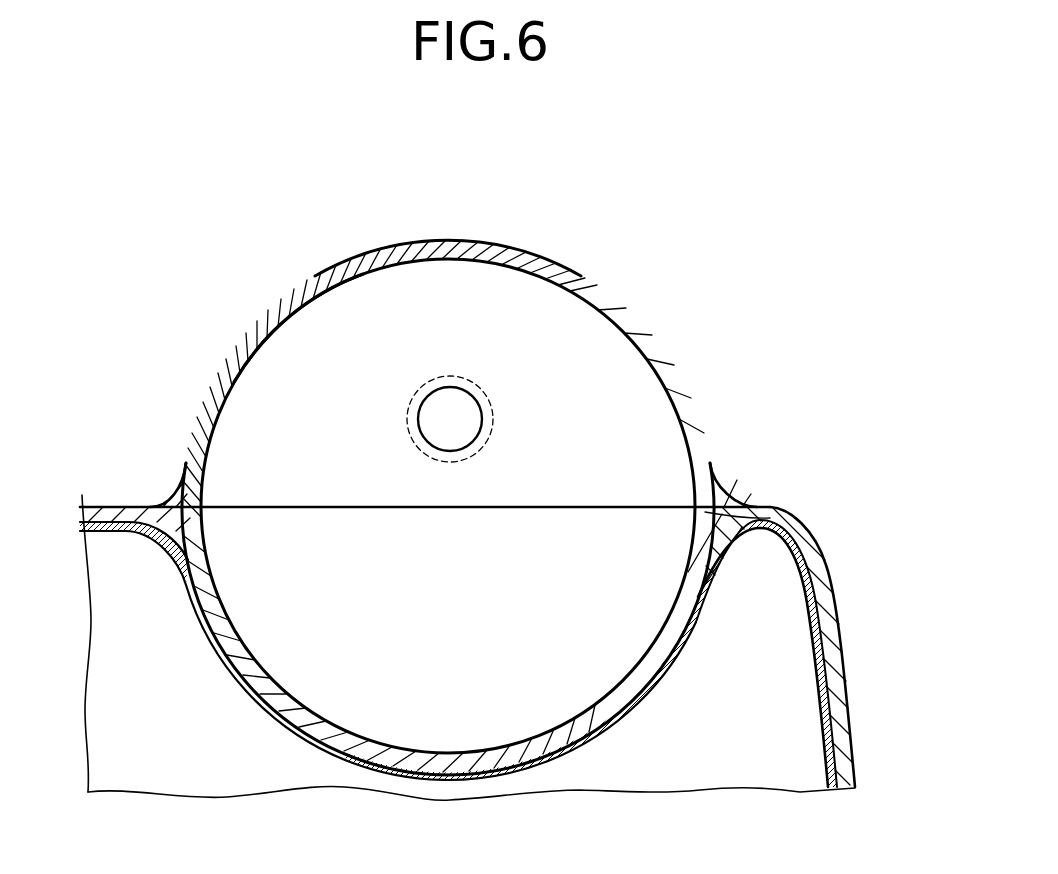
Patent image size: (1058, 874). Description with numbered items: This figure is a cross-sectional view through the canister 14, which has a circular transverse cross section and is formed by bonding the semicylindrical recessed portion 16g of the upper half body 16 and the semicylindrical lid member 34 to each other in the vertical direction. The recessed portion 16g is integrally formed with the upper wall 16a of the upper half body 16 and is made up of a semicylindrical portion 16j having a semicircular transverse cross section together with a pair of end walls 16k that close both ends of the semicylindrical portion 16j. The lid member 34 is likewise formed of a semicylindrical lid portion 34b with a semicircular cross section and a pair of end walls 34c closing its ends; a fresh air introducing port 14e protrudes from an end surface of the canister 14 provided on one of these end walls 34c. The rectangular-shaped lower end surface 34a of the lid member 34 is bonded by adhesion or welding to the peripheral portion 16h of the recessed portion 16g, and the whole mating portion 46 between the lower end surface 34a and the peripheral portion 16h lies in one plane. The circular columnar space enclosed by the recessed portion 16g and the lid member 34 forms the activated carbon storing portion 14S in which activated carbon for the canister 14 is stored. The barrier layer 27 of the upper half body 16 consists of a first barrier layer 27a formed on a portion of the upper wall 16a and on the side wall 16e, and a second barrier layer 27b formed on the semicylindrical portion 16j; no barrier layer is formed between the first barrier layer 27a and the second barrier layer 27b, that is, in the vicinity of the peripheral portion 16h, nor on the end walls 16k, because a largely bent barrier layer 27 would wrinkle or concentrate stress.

The canister 14 is at (602, 274).
The fresh air introducing port 14e is at (471, 381).
The activated carbon storing portion 14S is at (609, 369).
The upper half body 16 is at (499, 636).
The upper wall 16a is at (142, 507).
The side wall 16e is at (850, 683).
The recessed portion 16g is at (311, 757).
The peripheral portion 16h is at (763, 492).
The semicylindrical portion 16j is at (425, 778).
The end wall 16k is at (548, 660).
The barrier layer 27 is at (729, 713).
The first barrier layer 27a is at (818, 725).
The second barrier layer 27b is at (515, 778).
The lid member 34 is at (499, 475).
The lower end surface 34a is at (776, 514).
The semicylindrical lid portion 34b is at (383, 247).
The end wall 34c is at (265, 398).
The mating portion 46 is at (592, 508).